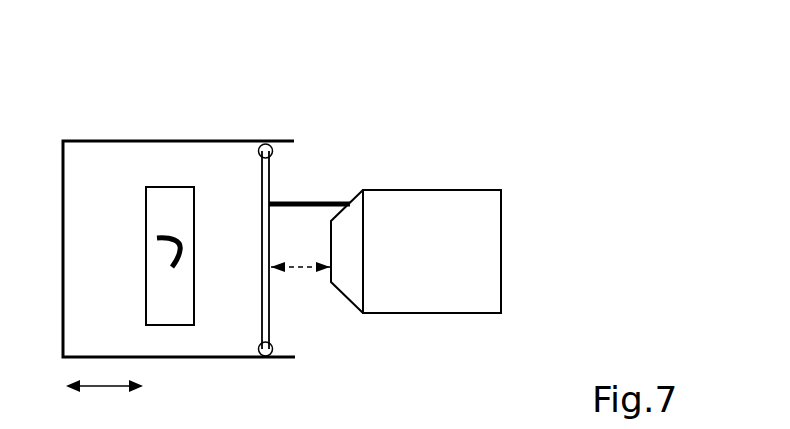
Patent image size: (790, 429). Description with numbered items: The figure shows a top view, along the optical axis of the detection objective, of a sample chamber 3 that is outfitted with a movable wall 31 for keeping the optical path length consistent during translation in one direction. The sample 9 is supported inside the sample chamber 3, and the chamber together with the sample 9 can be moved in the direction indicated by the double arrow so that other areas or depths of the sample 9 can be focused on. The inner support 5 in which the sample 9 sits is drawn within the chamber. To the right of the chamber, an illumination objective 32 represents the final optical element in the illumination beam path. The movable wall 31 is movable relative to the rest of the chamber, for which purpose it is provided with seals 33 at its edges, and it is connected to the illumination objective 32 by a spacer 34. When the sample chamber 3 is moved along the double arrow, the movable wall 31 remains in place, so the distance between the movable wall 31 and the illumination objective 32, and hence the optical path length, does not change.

The sample chamber 3 is at (87, 138).
The carrier element 5 is at (155, 195).
The sample 9 is at (170, 233).
The movable wall 31 is at (272, 175).
The illumination objective 32 is at (442, 202).
The seals 33 is at (264, 144).
The spacer 34 is at (327, 198).